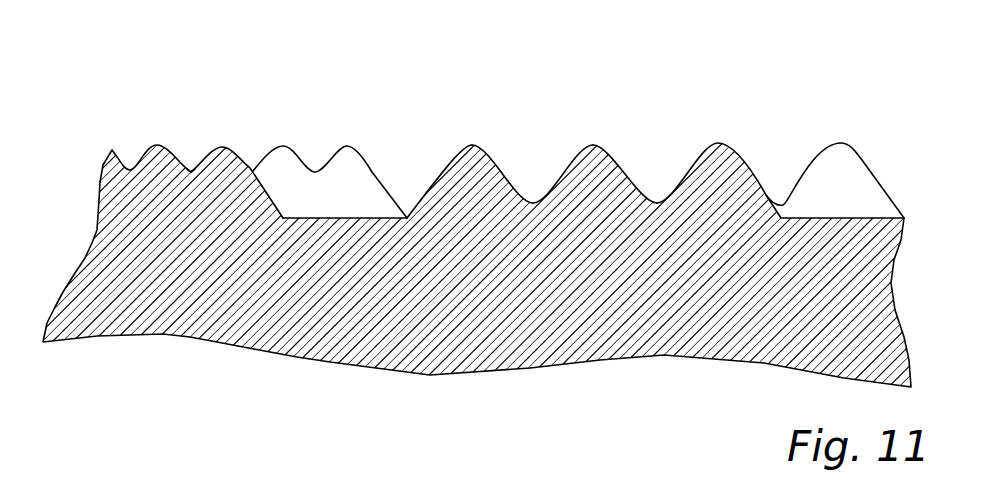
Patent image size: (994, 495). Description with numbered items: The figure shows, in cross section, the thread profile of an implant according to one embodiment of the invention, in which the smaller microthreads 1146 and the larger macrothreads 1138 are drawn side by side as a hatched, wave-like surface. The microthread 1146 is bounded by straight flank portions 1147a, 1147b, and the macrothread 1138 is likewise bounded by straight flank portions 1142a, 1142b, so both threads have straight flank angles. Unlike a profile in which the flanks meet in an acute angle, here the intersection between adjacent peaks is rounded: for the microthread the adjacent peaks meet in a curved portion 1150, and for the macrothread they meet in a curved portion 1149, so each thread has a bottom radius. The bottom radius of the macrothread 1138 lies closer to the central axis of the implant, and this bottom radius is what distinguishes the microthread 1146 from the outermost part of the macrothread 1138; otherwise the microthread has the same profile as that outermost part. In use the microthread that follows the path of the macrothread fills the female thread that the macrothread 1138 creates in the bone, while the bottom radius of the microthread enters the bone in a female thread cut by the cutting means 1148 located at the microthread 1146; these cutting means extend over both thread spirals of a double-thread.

The straight flank portion 1147b is at (133, 168).
The straight flank portion 1147a is at (191, 170).
The curved portion 1150 is at (193, 167).
The microthread 1146 is at (233, 150).
The cutting means 1148 is at (289, 143).
The curved portion 1149 is at (533, 203).
The macrothread 1138 is at (616, 120).
The straight flank portion 1142b is at (572, 168).
The straight flank portion 1142a is at (624, 170).